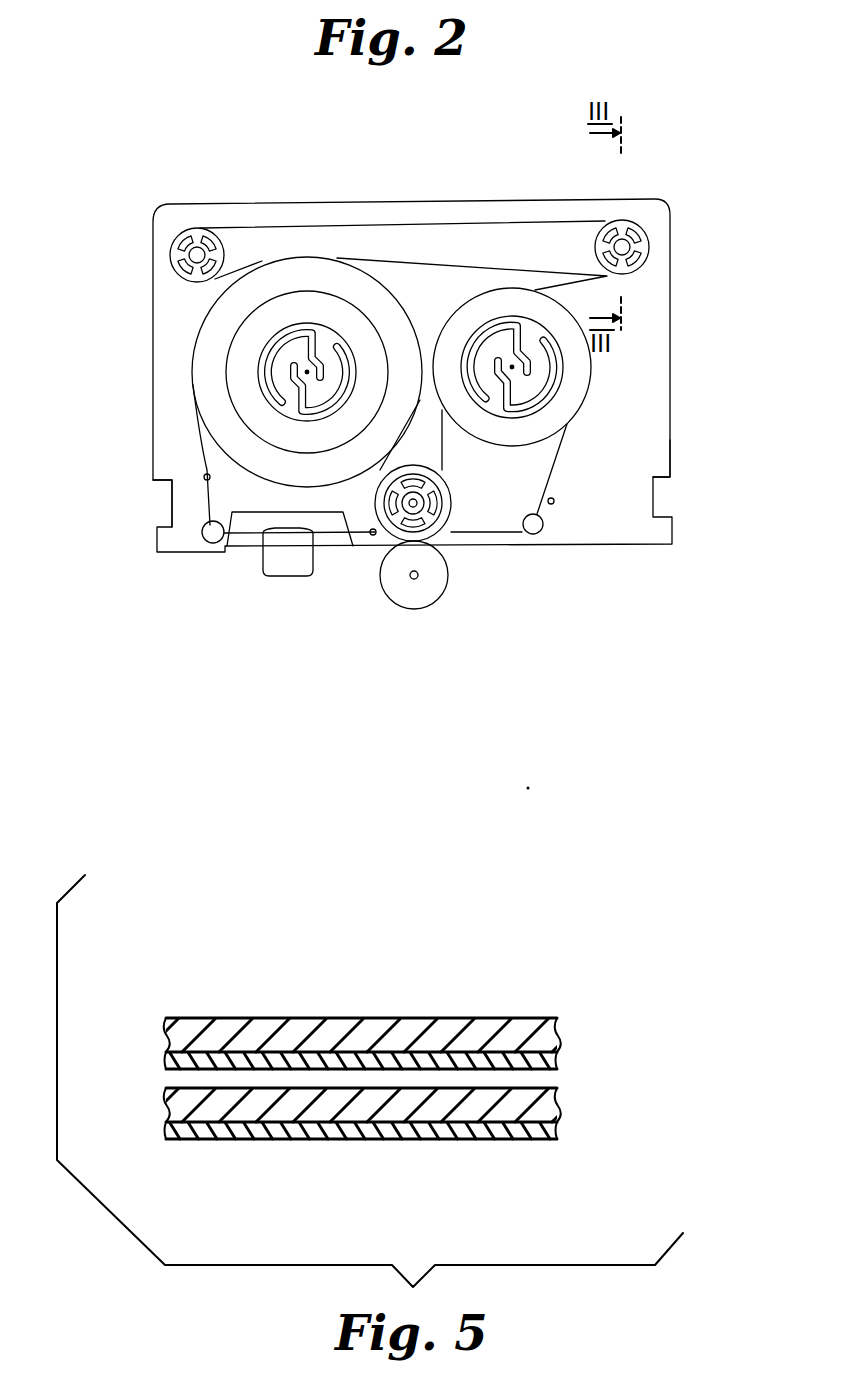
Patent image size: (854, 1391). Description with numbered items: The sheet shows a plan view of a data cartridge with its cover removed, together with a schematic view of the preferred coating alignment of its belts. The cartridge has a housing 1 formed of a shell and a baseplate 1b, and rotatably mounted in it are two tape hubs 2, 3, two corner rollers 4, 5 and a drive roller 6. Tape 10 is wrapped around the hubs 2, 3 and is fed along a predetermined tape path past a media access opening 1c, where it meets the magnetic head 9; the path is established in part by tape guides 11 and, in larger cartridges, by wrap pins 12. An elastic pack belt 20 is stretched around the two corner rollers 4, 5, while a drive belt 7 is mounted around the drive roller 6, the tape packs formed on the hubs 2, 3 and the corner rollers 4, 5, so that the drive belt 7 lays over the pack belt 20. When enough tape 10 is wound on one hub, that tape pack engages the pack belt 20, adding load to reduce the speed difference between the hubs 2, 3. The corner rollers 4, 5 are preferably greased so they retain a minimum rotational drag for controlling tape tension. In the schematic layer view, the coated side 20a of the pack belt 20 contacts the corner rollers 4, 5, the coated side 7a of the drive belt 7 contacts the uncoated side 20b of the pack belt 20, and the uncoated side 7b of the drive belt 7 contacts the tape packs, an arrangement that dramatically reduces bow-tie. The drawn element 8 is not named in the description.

In FIG. 2, the housing 1 is at (672, 330).
In FIG. 2, the baseplate 1b is at (672, 457).
In FIG. 2, the media access opening 1c is at (333, 540).
In FIG. 2, the tape hub 2 is at (243, 368).
In FIG. 2, the tape hub 3 is at (572, 392).
In FIG. 2, the corner roller 4 is at (182, 238).
In FIG. 2, the corner roller 5 is at (641, 232).
In FIG. 2, the drive roller 6 is at (441, 521).
In FIG. 2, the drive belt 7 is at (443, 457).
In FIG. 5, the drive belt 7 is at (334, 1011).
In FIG. 5, the coated side of the drive belt 7a is at (170, 1060).
In FIG. 5, the uncoated side of the drive belt 7b is at (178, 1037).
In FIG. 2, the pinch roller 8 is at (405, 600).
In FIG. 2, the magnetic head 9 is at (295, 563).
In FIG. 2, the tape 10 is at (205, 495).
In FIG. 2, the tape guide 11 is at (588, 580).
In FIG. 2, the wrap pin 12 is at (592, 483).
In FIG. 2, the pack belt 20 is at (360, 257).
In FIG. 5, the pack belt 20 is at (401, 1142).
In FIG. 5, the coated side of the pack belt 20a is at (404, 1131).
In FIG. 5, the uncoated side of the pack belt 20b is at (398, 1099).